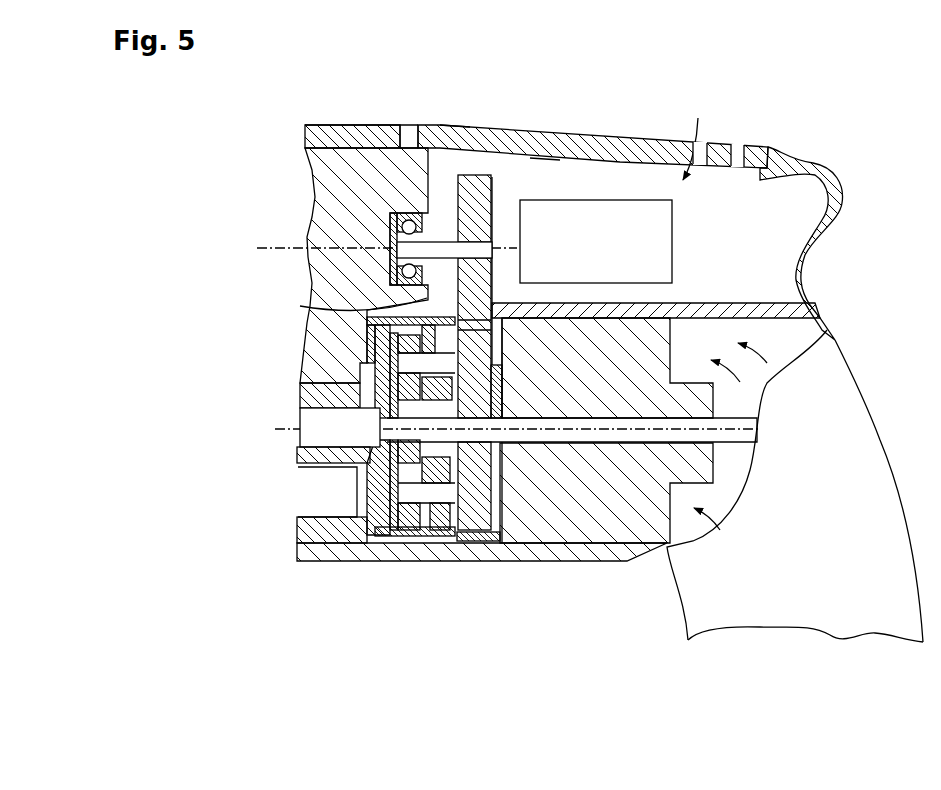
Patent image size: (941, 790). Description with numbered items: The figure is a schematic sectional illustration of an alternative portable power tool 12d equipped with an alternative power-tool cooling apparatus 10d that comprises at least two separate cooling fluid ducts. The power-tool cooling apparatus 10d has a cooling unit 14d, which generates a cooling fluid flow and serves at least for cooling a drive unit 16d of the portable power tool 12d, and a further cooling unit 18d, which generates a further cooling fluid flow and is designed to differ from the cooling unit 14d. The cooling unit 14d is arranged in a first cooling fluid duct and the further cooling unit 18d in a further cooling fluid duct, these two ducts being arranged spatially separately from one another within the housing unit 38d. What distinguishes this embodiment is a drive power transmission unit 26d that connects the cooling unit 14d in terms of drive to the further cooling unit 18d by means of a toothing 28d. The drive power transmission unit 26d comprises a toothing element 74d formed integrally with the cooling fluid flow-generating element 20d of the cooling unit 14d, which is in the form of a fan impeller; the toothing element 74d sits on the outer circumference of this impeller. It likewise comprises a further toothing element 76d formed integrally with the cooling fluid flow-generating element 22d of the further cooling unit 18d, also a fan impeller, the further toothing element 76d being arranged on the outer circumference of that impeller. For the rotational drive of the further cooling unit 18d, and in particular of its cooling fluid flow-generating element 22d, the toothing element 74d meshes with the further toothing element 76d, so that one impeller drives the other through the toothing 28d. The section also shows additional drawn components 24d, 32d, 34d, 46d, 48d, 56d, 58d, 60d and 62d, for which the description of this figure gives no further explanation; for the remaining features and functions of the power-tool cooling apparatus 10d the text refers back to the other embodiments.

The power-tool cooling apparatus 10d is at (547, 114).
The portable power tool 12d is at (269, 122).
The cooling unit 14d is at (405, 568).
The drive unit 16d is at (611, 588).
The further cooling unit 18d is at (508, 162).
The cooling fluid flow-generating element 20d is at (472, 520).
The cooling fluid flow-generating element 22d is at (492, 206).
The input shaft 24d is at (294, 446).
The drive power transmission unit 26d is at (455, 112).
The toothing 28d is at (479, 171).
The bearing housing 32d is at (283, 247).
The electronics unit 34d is at (618, 213).
The housing unit 38d is at (341, 112).
The ventilation opening 46d is at (372, 127).
The clutch 48d is at (286, 485).
The shaft 56d is at (287, 423).
The rotor 58d is at (592, 433).
The housing flange 60d is at (759, 126).
The air opening 62d is at (709, 193).
The toothing element 74d is at (432, 297).
The further toothing element 76d is at (439, 199).